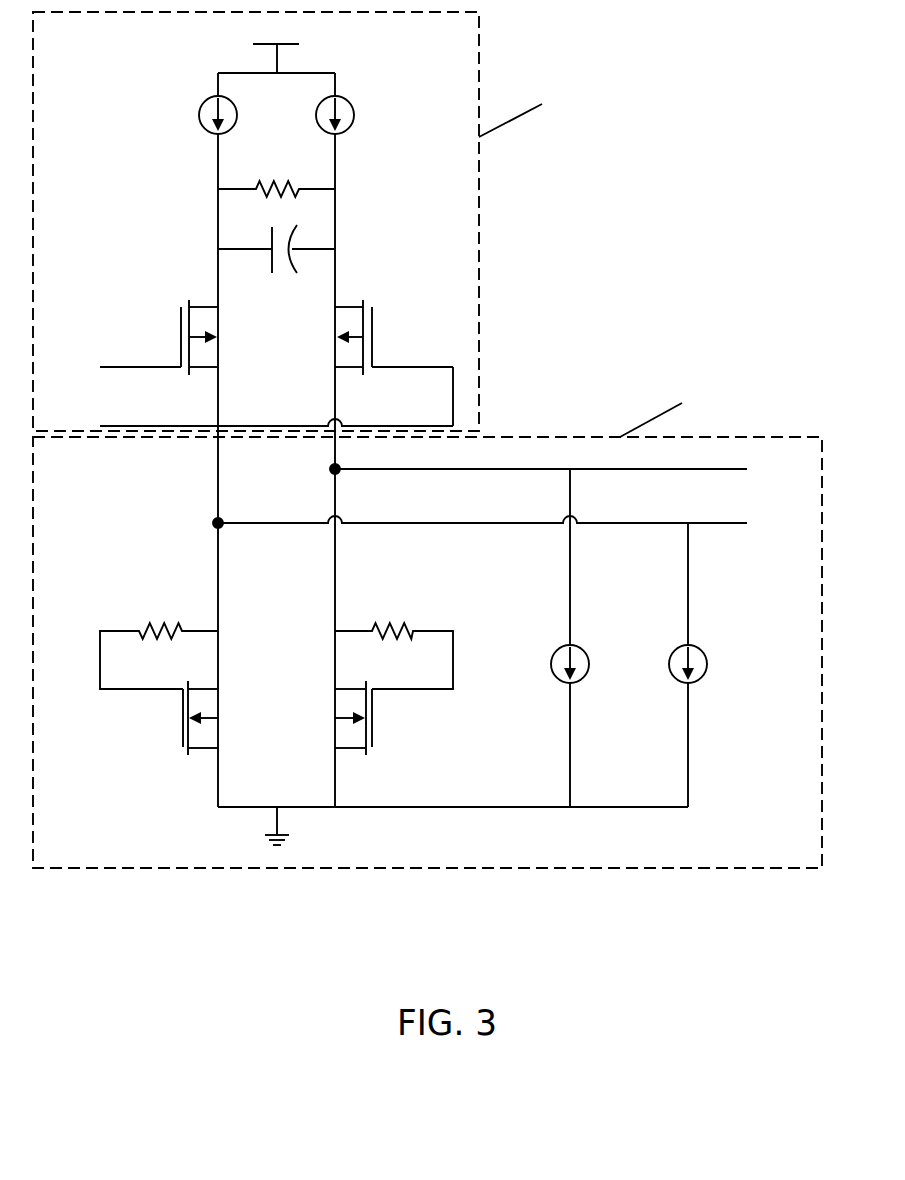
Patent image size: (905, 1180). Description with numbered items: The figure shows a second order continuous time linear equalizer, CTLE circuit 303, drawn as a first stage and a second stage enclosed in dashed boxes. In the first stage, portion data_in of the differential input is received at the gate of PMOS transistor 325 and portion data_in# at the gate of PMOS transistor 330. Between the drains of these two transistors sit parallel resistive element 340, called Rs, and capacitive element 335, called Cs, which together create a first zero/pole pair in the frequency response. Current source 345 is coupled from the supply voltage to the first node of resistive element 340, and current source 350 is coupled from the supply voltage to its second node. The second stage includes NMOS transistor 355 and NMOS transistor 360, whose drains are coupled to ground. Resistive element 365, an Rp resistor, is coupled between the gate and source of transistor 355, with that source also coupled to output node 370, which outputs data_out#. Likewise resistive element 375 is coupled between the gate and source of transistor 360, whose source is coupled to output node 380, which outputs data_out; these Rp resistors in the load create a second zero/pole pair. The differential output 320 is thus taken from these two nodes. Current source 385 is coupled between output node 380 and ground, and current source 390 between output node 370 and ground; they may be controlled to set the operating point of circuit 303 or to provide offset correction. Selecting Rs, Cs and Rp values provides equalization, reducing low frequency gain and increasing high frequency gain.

The CTLE circuit 303 is at (551, 221).
The differential output (data_out/data_out#) 320 is at (741, 538).
The PMOS transistor 325 is at (209, 302).
The PMOS transistor 330 is at (353, 302).
The capacitive element 335 is at (276, 278).
The resistive element 340 is at (267, 177).
The current source 345 is at (199, 115).
The current source 350 is at (354, 115).
The NMOS transistor 355 is at (172, 717).
The NMOS transistor 360 is at (377, 717).
The resistive element 365 is at (158, 618).
The output node 370 is at (207, 523).
The resistive element 375 is at (393, 617).
The output node 380 is at (327, 470).
The current source 385 is at (590, 663).
The current source 390 is at (708, 663).